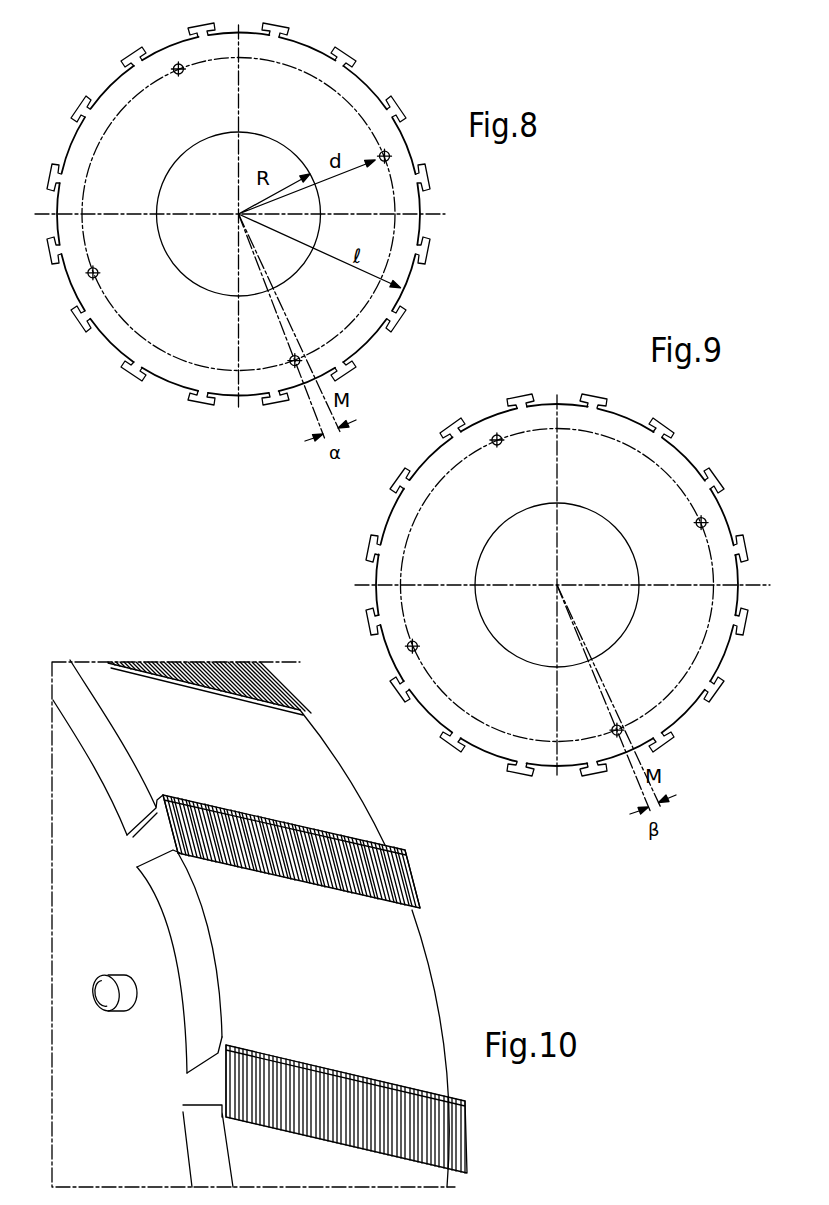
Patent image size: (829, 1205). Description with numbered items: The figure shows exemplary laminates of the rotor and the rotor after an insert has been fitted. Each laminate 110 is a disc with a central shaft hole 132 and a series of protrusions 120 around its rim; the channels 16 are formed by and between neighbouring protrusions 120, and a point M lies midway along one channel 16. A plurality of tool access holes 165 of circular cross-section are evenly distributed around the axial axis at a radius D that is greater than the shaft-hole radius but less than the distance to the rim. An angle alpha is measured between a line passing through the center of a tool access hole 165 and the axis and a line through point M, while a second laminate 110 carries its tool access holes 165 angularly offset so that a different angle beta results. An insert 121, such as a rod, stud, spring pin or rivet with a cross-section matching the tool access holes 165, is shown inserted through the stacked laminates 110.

In FIG. 8, the laminate 110 is at (394, 68).
In FIG. 9, the laminate 110 is at (545, 388).
In FIG. 10, the laminate 110 is at (106, 877).
In FIG. 8, the protrusions 120 is at (430, 186).
In FIG. 9, the protrusions 120 is at (676, 430).
In FIG. 8, the shaft hole 132 is at (174, 160).
In FIG. 9, the shaft hole 132 is at (488, 545).
In FIG. 8, the tool access holes 165 is at (175, 61).
In FIG. 9, the tool access holes 165 is at (494, 431).
In FIG. 8, the channel 16 is at (307, 397).
In FIG. 9, the channel 16 is at (640, 723).
In FIG. 10, the insert 121 is at (95, 981).